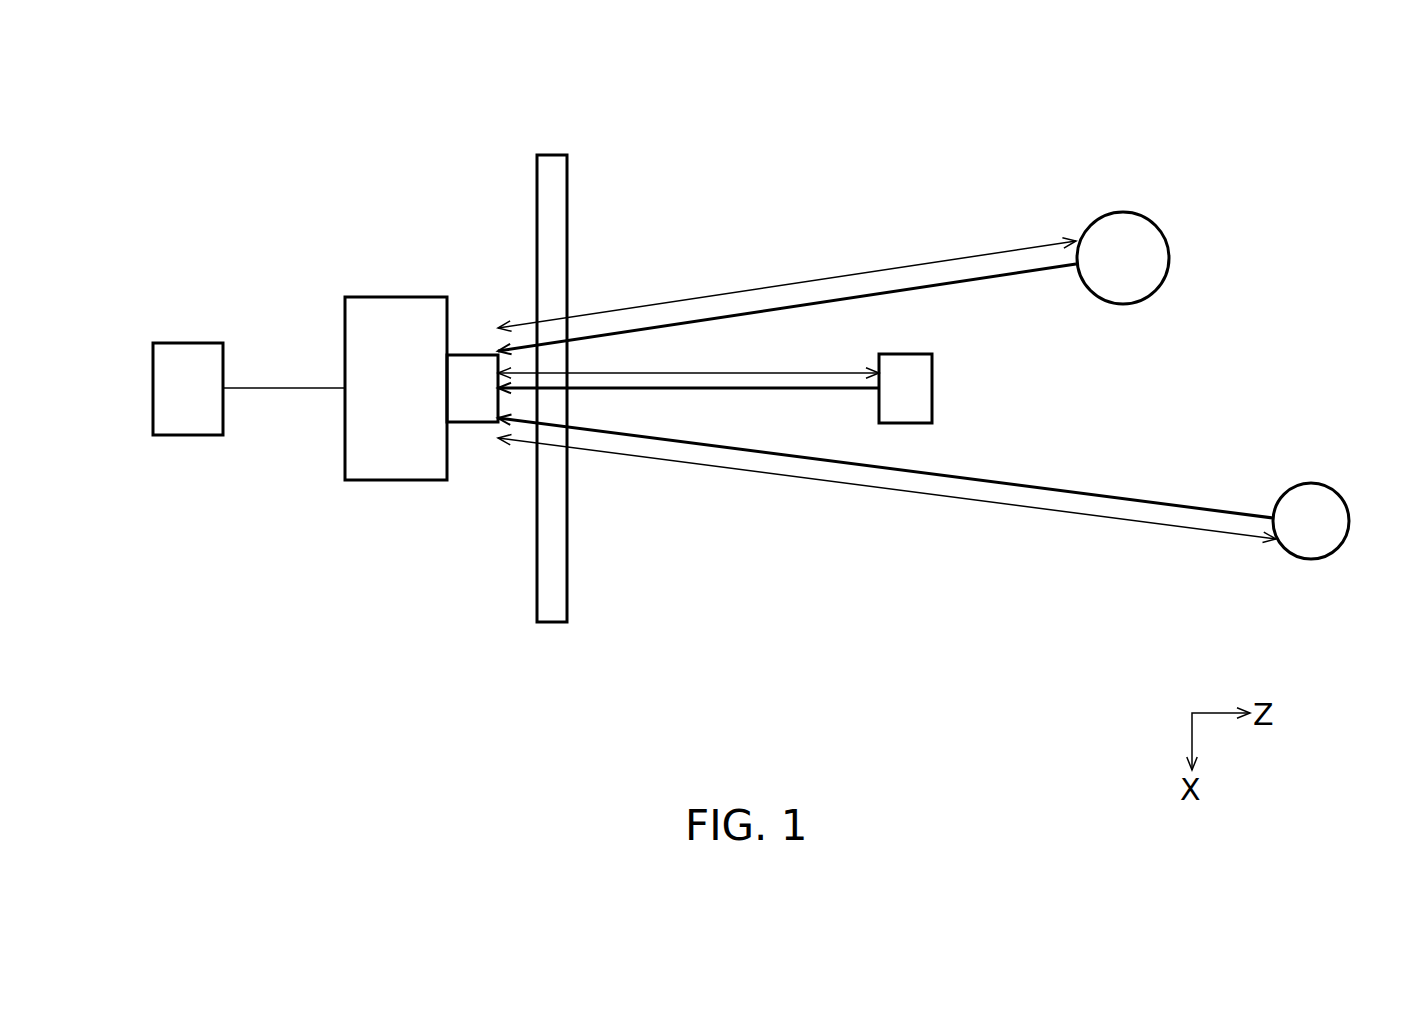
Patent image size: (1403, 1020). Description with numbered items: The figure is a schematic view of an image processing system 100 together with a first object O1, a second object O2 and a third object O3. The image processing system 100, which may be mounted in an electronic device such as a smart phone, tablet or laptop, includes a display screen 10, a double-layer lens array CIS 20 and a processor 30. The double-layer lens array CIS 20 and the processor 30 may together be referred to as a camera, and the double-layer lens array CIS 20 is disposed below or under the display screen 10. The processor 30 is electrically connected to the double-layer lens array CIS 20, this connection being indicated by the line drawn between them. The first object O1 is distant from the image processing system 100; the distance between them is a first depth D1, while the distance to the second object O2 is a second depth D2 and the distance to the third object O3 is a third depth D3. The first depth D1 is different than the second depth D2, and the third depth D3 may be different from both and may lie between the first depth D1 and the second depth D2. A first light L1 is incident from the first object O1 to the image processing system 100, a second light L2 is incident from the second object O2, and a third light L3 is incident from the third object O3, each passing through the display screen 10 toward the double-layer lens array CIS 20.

The image processing system 100 is at (365, 157).
The display screen 10 is at (552, 622).
The double-layer lens array CIS 20 is at (397, 480).
The processor 30 is at (189, 435).
The first object O1 is at (932, 388).
The second object O2 is at (1313, 560).
The third object O3 is at (1169, 257).
The first depth D1 is at (732, 373).
The second depth D2 is at (905, 492).
The third depth D3 is at (737, 291).
The first light L1 is at (732, 388).
The second light L2 is at (810, 459).
The third light L3 is at (870, 294).